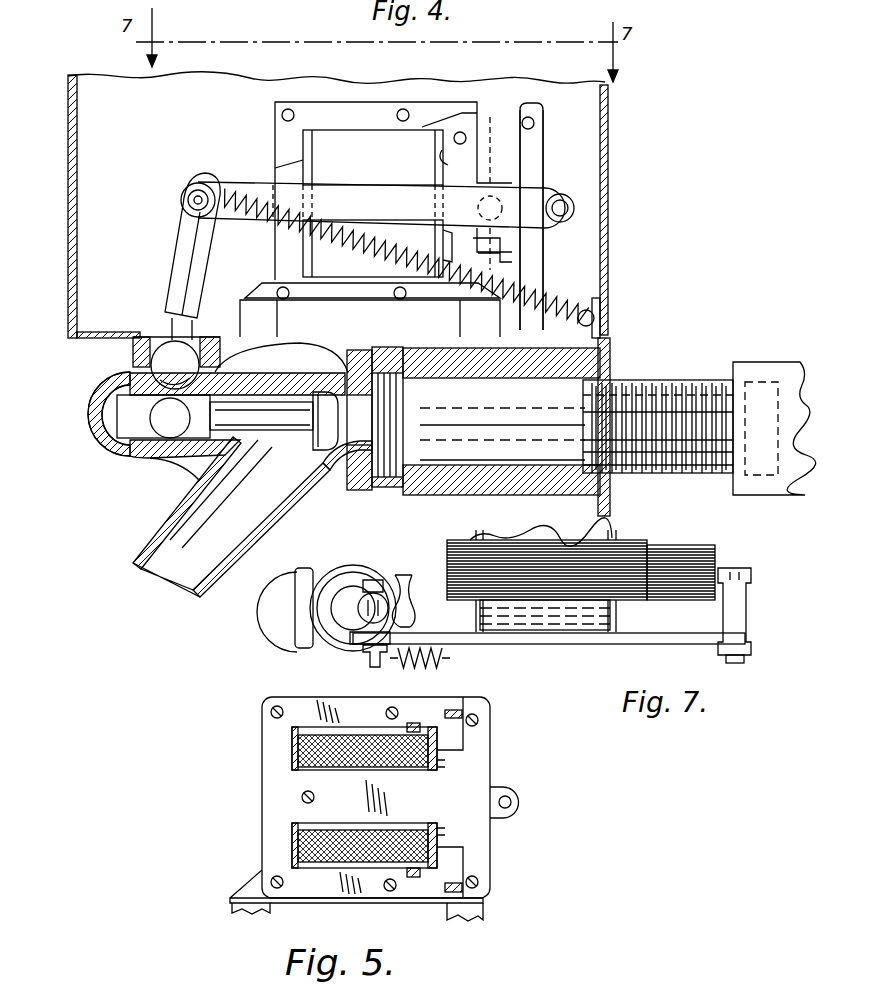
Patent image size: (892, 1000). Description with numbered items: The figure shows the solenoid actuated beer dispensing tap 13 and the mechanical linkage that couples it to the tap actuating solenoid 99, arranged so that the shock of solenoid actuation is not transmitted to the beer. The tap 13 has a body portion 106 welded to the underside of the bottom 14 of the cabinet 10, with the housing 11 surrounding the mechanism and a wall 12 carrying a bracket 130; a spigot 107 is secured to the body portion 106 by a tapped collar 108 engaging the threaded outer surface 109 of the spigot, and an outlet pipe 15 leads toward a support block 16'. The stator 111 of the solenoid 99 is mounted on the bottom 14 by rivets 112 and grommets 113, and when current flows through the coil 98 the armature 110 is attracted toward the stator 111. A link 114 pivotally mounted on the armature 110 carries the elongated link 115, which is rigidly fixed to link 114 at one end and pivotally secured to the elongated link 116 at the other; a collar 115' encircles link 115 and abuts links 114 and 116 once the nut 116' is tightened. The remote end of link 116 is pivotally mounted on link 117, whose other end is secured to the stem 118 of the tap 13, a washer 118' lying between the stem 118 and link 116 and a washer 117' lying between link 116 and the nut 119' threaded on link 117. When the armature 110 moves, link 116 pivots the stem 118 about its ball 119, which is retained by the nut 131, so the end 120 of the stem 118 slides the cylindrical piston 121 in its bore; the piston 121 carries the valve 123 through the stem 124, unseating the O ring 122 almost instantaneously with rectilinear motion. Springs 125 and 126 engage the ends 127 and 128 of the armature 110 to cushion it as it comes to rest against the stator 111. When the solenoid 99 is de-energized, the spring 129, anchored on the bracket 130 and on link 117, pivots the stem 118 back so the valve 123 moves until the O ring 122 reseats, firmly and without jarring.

In FIG. 4, the cabinet 10 is at (610, 121).
In FIG. 4, the housing 11 is at (68, 180).
In FIG. 4, the wall 12 is at (608, 186).
In FIG. 4, the beer dispensing tap 13 is at (232, 548).
In FIG. 7, the beer dispensing tap 13 is at (408, 592).
In FIG. 4, the bottom 14 is at (97, 335).
In FIG. 4, the threaded pipe 15 is at (640, 478).
In FIG. 4, the support block 16' is at (774, 407).
In FIG. 4, the coil 98 is at (332, 143).
In FIG. 7, the coil 98 is at (575, 628).
In FIG. 4, the tap actuating solenoid 99 is at (381, 96).
In FIG. 7, the tap actuating solenoid 99 is at (618, 530).
In FIG. 5, the tap actuating solenoid 99 is at (262, 705).
In FIG. 4, the body portion 106 is at (478, 492).
In FIG. 4, the spigot 107 is at (265, 492).
In FIG. 4, the tapped collar 108 is at (372, 490).
In FIG. 4, the threaded outer surface 109 is at (336, 490).
In FIG. 4, the armature 110 is at (541, 142).
In FIG. 7, the armature 110 is at (702, 545).
In FIG. 4, the stator 111 is at (432, 100).
In FIG. 7, the stator 111 is at (447, 552).
In FIG. 5, the stator 111 is at (265, 744).
In FIG. 4, the rivets 112 is at (258, 298).
In FIG. 4, the grommets 113 is at (272, 326).
In FIG. 5, the grommets 113 is at (230, 906).
In FIG. 7, the link 114 is at (736, 568).
In FIG. 5, the link 114 is at (522, 797).
In FIG. 4, the elongated link 115 is at (568, 186).
In FIG. 7, the elongated link 115 is at (774, 633).
In FIG. 5, the elongated link 115 is at (548, 811).
In FIG. 7, the collar 115' is at (776, 603).
In FIG. 4, the elongated link 116 is at (381, 191).
In FIG. 7, the elongated link 116 is at (549, 650).
In FIG. 7, the nut 116' is at (776, 660).
In FIG. 4, the link 117 is at (194, 171).
In FIG. 7, the link 117 is at (390, 584).
In FIG. 7, the washer 117' is at (312, 658).
In FIG. 4, the stem 118 is at (168, 256).
In FIG. 7, the stem 118 is at (351, 580).
In FIG. 7, the washer 118' is at (408, 638).
In FIG. 4, the ball 119 is at (129, 365).
In FIG. 7, the nut 119' is at (339, 673).
In FIG. 4, the end 120 is at (142, 462).
In FIG. 4, the cylindrical piston 121 is at (112, 420).
In FIG. 4, the O ring 122 is at (306, 458).
In FIG. 4, the valve 123 is at (305, 368).
In FIG. 4, the stem 124 is at (258, 400).
In FIG. 4, the spring 125 is at (448, 165).
In FIG. 5, the spring 125 is at (440, 757).
In FIG. 4, the spring 126 is at (440, 238).
In FIG. 5, the spring 126 is at (440, 855).
In FIG. 4, the end 127 is at (492, 183).
In FIG. 7, the end 127 is at (664, 545).
In FIG. 5, the end 127 is at (440, 768).
In FIG. 4, the end 128 is at (487, 248).
In FIG. 5, the end 128 is at (440, 830).
In FIG. 4, the spring 129 is at (366, 214).
In FIG. 7, the spring 129 is at (445, 658).
In FIG. 4, the bracket 130 is at (586, 312).
In FIG. 4, the nut 131 is at (133, 352).
In FIG. 7, the nut 131 is at (338, 572).